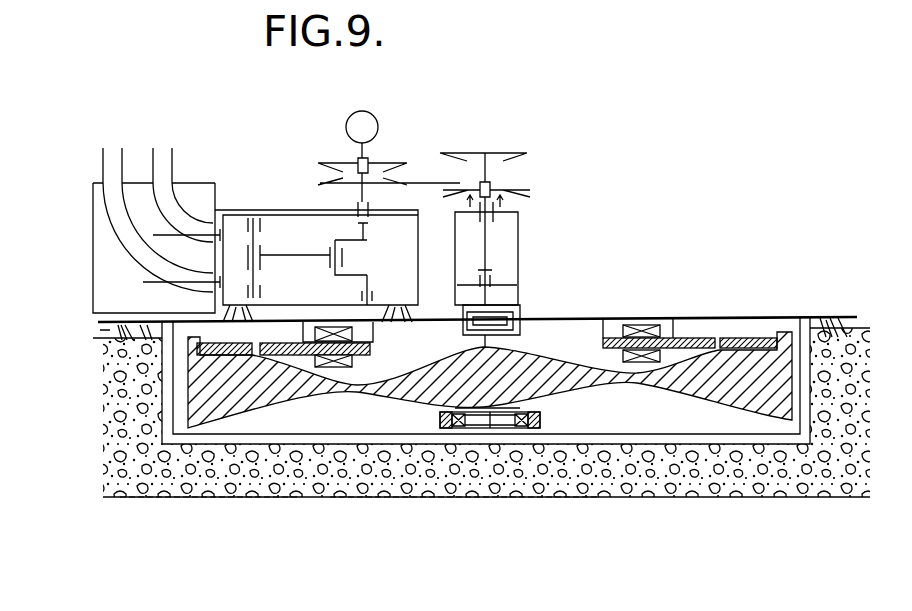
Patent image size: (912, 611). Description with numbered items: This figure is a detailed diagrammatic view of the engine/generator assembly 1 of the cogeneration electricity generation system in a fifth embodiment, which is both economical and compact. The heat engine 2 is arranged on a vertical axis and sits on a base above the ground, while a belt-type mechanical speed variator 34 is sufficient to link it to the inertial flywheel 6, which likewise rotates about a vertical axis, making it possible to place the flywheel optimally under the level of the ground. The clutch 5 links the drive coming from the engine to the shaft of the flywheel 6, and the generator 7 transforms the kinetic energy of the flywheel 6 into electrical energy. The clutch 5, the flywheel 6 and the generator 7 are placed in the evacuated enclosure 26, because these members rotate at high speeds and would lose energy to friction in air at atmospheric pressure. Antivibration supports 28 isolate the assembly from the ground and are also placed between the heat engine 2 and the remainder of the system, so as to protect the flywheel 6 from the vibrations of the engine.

The engine/generator assembly 1 is at (598, 202).
The heat engine 2 is at (103, 137).
The clutch 5 is at (500, 312).
The inertial flywheel 6 is at (497, 372).
The generator 7 is at (682, 340).
The evacuated enclosure 26 is at (743, 330).
The antivibration supports 28 is at (117, 328).
The belt-type mechanical speed variator 34 is at (497, 148).